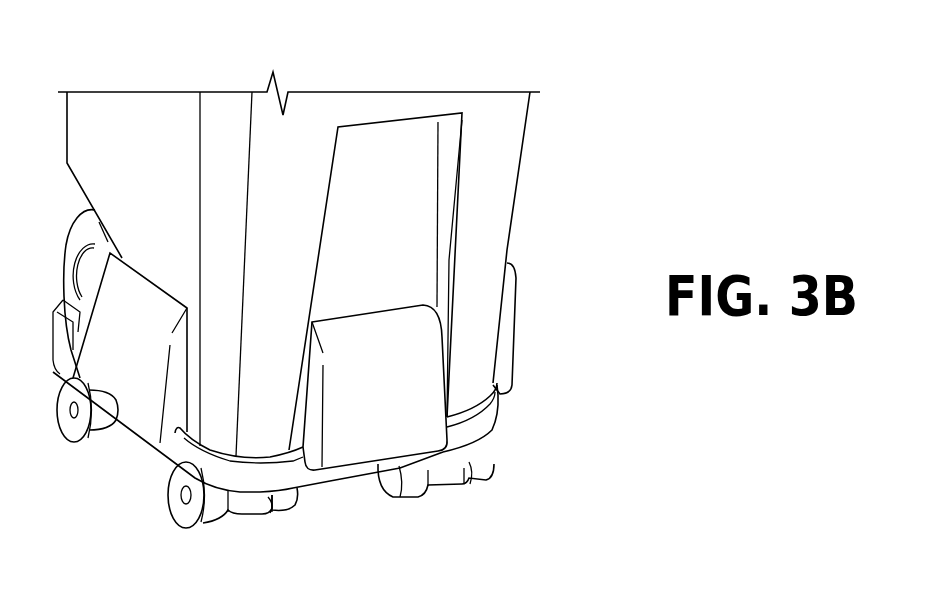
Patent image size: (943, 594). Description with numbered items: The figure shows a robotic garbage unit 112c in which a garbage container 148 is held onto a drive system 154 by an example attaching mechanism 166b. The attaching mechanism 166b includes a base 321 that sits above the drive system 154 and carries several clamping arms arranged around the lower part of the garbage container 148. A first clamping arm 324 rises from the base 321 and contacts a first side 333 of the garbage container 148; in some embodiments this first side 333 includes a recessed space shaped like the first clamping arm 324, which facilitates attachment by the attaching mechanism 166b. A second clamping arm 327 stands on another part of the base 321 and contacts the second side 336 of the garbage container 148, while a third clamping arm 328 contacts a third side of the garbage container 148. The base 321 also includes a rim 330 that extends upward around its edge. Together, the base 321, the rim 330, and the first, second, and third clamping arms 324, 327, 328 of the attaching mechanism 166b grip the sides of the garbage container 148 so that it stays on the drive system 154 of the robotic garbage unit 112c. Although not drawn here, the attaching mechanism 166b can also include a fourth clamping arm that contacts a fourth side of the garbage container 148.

The robotic garbage unit 112c is at (636, 48).
The garbage container 148 is at (493, 107).
The second side 336 is at (168, 200).
The first side 333 is at (398, 230).
The first clamping arm 324 is at (383, 335).
The second clamping arm 327 is at (139, 300).
The rim 330 is at (49, 328).
The third clamping arm 328 is at (518, 312).
The base 321 is at (333, 473).
The drive system 154 is at (485, 472).
The attaching mechanism 166b is at (130, 525).